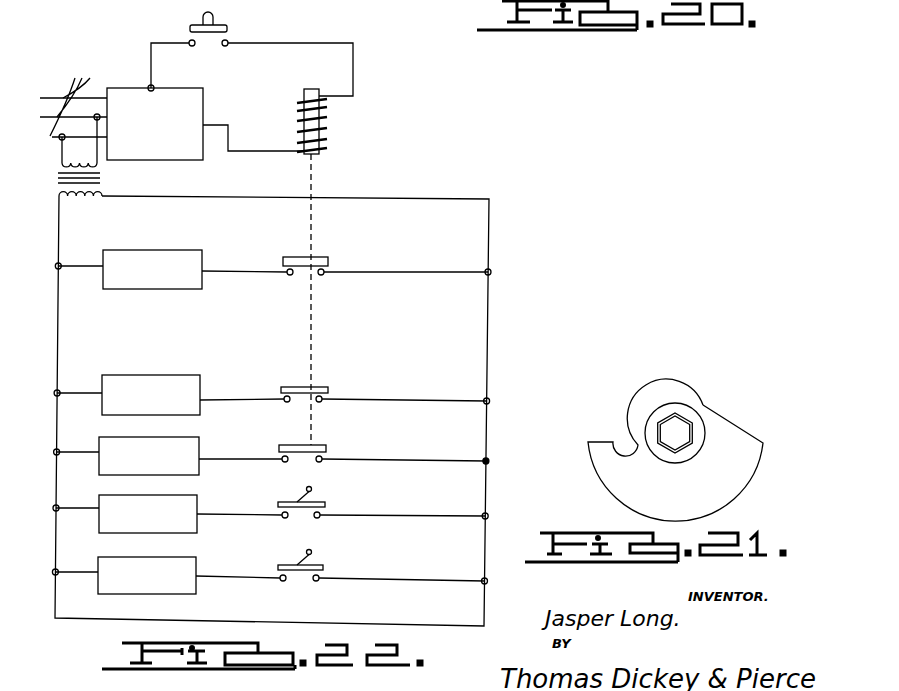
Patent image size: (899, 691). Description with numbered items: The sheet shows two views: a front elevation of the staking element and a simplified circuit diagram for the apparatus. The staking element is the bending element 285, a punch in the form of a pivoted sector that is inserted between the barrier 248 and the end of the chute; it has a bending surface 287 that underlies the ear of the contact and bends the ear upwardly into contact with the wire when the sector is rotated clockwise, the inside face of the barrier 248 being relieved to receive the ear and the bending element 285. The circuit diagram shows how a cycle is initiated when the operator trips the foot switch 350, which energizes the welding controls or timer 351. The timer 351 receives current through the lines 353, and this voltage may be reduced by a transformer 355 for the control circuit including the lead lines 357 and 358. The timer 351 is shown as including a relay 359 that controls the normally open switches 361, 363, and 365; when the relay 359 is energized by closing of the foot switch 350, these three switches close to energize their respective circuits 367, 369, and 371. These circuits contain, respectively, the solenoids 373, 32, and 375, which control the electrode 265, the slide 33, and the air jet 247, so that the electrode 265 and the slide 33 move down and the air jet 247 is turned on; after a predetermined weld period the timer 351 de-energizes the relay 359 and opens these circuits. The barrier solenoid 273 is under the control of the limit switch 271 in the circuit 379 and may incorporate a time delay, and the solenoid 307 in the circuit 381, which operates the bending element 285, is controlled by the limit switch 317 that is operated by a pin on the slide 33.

In FIG. 22, the foot switch 350 is at (213, 10).
In FIG. 22, the welding controls 351 is at (220, 76).
In FIG. 22, the lines 353 is at (73, 97).
In FIG. 22, the transformer 355 is at (97, 183).
In FIG. 22, the lead line 357 is at (59, 230).
In FIG. 22, the lead line 358 is at (489, 233).
In FIG. 22, the relay 359 is at (327, 120).
In FIG. 22, the switch 361 is at (328, 259).
In FIG. 22, the switch 363 is at (328, 388).
In FIG. 22, the switch 365 is at (315, 445).
In FIG. 22, the circuit 367 is at (385, 272).
In FIG. 22, the circuit 369 is at (420, 385).
In FIG. 22, the circuit 371 is at (422, 447).
In FIG. 22, the solenoid 373 is at (156, 255).
In FIG. 22, the solenoid 375 is at (170, 446).
In FIG. 22, the circuit 379 is at (422, 501).
In FIG. 22, the circuit 381 is at (422, 563).
In FIG. 22, the limit switch 271 is at (315, 502).
In FIG. 22, the barrier solenoid 273 is at (172, 503).
In FIG. 22, the solenoid 307 is at (170, 563).
In FIG. 22, the limit switch 317 is at (320, 565).
In FIG. 22, the solenoid 32 is at (151, 381).
In FIG. 22, the electrode 265 is at (170, 232).
In FIG. 22, the slide 33 is at (165, 358).
In FIG. 22, the air jet 247 is at (205, 424).
In FIG. 22, the barrier 248 is at (212, 481).
In FIG. 22, the bending element 285 is at (205, 543).
In FIG. 21, the bending element 285 is at (737, 432).
In FIG. 21, the bending surface 287 is at (620, 412).